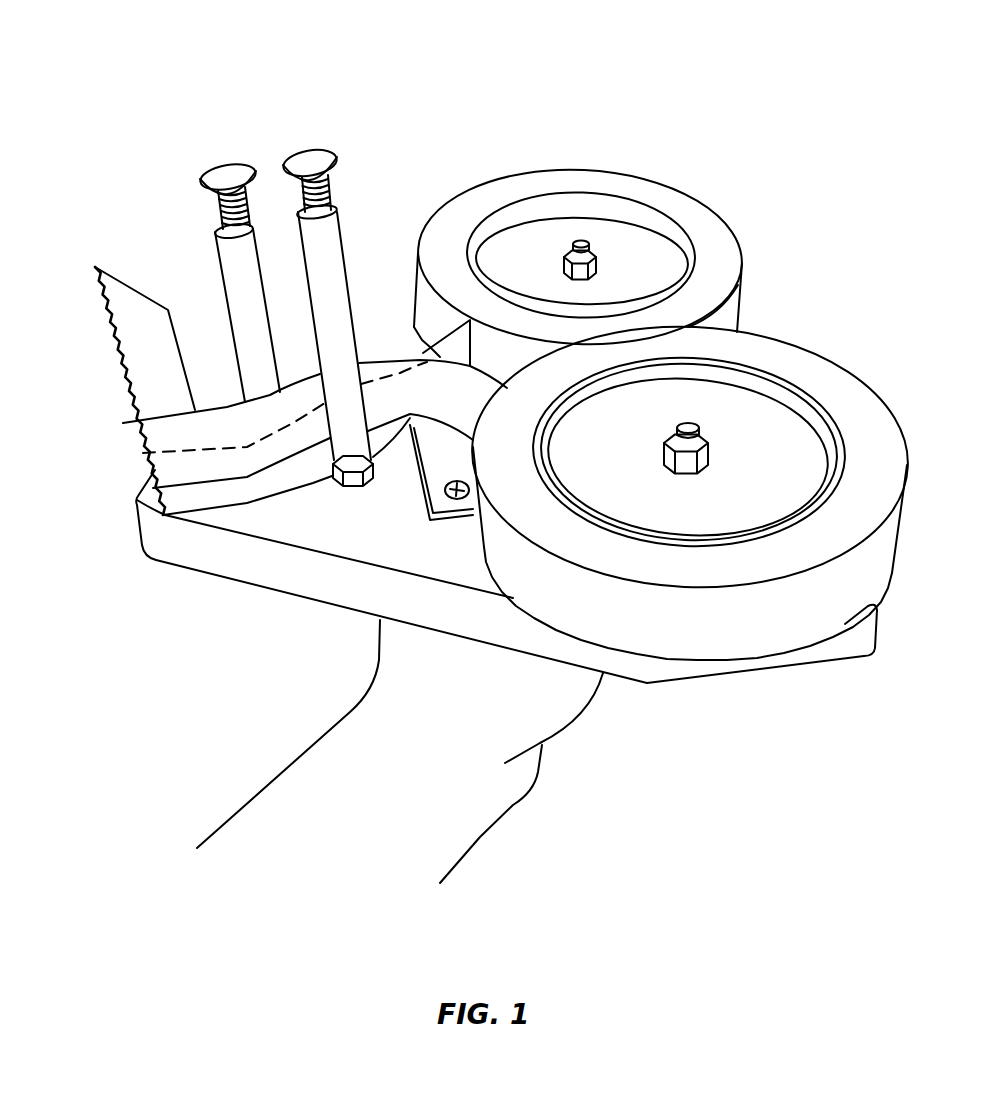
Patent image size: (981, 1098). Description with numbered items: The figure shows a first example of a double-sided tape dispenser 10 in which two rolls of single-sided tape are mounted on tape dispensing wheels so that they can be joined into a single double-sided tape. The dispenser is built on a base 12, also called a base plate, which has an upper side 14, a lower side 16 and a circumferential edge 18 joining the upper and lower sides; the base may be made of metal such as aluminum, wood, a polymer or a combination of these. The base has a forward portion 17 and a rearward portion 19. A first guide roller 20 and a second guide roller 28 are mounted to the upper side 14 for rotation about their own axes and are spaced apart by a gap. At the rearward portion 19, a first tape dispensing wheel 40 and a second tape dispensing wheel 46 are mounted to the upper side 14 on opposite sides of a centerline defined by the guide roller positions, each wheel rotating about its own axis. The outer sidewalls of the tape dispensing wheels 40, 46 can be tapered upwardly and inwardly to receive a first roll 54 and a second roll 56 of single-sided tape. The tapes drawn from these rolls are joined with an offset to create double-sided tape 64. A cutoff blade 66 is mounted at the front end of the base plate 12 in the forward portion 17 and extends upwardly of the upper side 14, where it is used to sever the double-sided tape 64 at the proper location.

The tape dispenser 10 is at (786, 62).
The base 12 is at (200, 577).
The upper side 14 is at (329, 538).
The lower side 16 is at (777, 670).
The forward portion 17 is at (233, 518).
The circumferential edge 18 is at (660, 668).
The rearward portion 19 is at (837, 643).
The first guide roller 20 is at (217, 257).
The second guide roller 28 is at (342, 247).
The first tape dispensing wheel 40 is at (779, 482).
The second tape dispensing wheel 46 is at (654, 283).
The first roll of single-sided tape 54 is at (825, 376).
The second roll of single-sided tape 56 is at (693, 220).
The double-sided tape 64 is at (163, 463).
The cutoff blade 66 is at (147, 351).